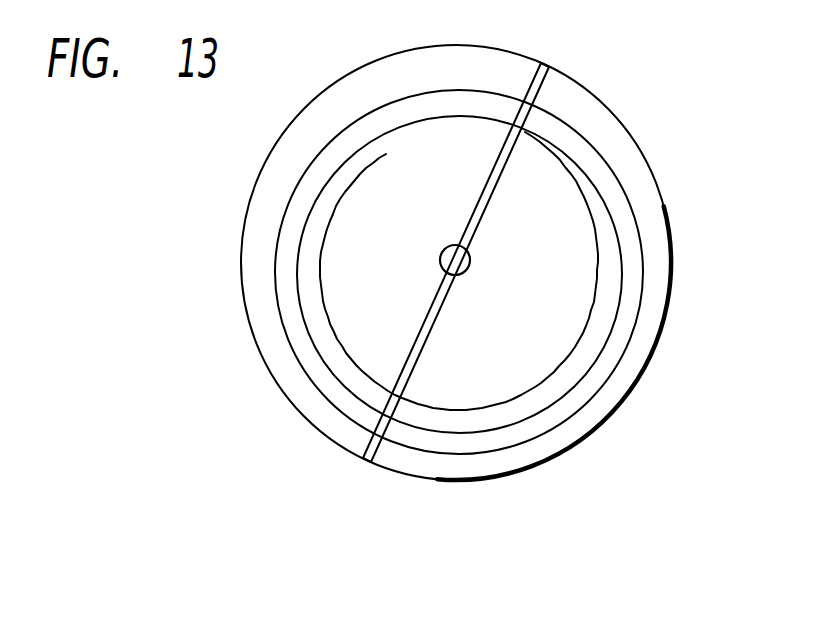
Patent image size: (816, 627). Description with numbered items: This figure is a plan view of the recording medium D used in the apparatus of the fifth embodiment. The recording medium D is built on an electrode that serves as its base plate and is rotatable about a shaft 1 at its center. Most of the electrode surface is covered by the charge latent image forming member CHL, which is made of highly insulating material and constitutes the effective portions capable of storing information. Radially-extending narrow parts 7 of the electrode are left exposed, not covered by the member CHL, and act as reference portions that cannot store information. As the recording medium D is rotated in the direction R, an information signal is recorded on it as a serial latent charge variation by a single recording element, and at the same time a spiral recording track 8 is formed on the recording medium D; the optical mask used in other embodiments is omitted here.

The shaft 1 is at (450, 247).
The radially-extending narrow parts 7 is at (545, 66).
The spiral recording track 8 is at (645, 254).
The recording medium D is at (641, 138).
The direction of rotation R is at (655, 402).
The charge latent image forming member CHL is at (565, 448).